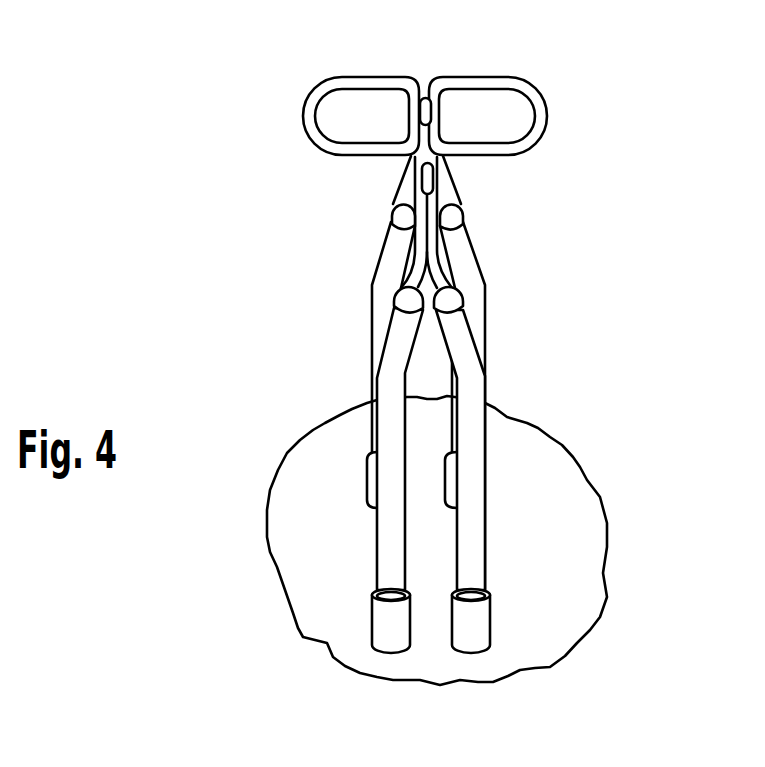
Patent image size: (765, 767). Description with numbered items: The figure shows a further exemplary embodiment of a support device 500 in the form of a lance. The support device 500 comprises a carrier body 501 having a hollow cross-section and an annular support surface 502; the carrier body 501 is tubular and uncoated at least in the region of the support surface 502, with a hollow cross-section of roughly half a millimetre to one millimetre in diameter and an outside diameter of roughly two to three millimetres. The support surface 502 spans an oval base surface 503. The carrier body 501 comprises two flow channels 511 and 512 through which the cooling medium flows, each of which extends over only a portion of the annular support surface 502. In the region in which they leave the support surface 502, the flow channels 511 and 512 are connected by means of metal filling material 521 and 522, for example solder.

The support device 500 is at (264, 277).
The carrier body 501 is at (320, 143).
The annular support surface 502 is at (327, 85).
The oval base surface 503 is at (365, 100).
The flow channel 511 is at (308, 118).
The flow channel 512 is at (527, 95).
The metal filling material 521 is at (428, 180).
The metal filling material 522 is at (426, 103).